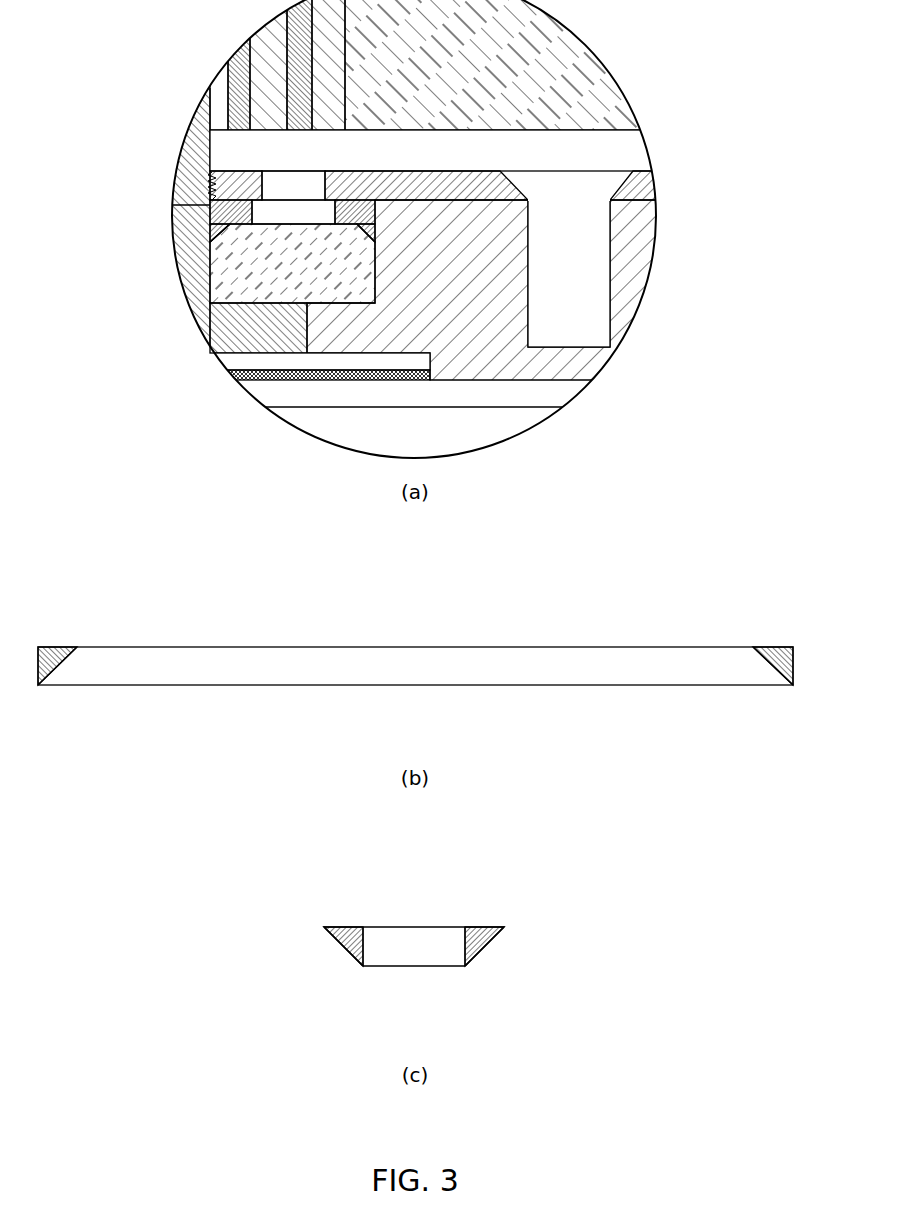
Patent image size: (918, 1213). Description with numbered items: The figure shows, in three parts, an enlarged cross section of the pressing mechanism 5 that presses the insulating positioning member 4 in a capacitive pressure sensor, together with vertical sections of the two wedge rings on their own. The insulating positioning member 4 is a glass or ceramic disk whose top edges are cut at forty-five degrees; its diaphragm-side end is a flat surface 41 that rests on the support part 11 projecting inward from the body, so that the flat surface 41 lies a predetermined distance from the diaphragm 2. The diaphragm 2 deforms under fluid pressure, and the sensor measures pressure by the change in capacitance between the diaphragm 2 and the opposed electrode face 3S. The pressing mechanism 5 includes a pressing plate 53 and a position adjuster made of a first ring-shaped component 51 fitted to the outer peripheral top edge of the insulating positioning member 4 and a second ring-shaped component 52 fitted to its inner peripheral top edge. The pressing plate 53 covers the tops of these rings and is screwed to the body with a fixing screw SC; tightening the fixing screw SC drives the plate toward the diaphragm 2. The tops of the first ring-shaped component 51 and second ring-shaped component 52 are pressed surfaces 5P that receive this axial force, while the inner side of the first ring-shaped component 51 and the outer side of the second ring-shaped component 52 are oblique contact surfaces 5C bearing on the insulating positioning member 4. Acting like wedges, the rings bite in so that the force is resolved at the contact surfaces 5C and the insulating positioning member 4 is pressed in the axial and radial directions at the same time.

The diaphragm 2 is at (292, 385).
The electrode face 3S is at (255, 371).
The insulating positioning member 4 is at (206, 261).
The pressing mechanism 5 is at (480, 162).
The contact surfaces 5C is at (224, 237).
The pressed surfaces 5P is at (207, 209).
The support part 11 is at (379, 344).
The flat surface 41 is at (252, 310).
The first ring-shaped component 51 is at (368, 212).
The second ring-shaped component 52 is at (218, 211).
The pressing plate 53 is at (452, 172).
The fixing screw SC is at (612, 273).